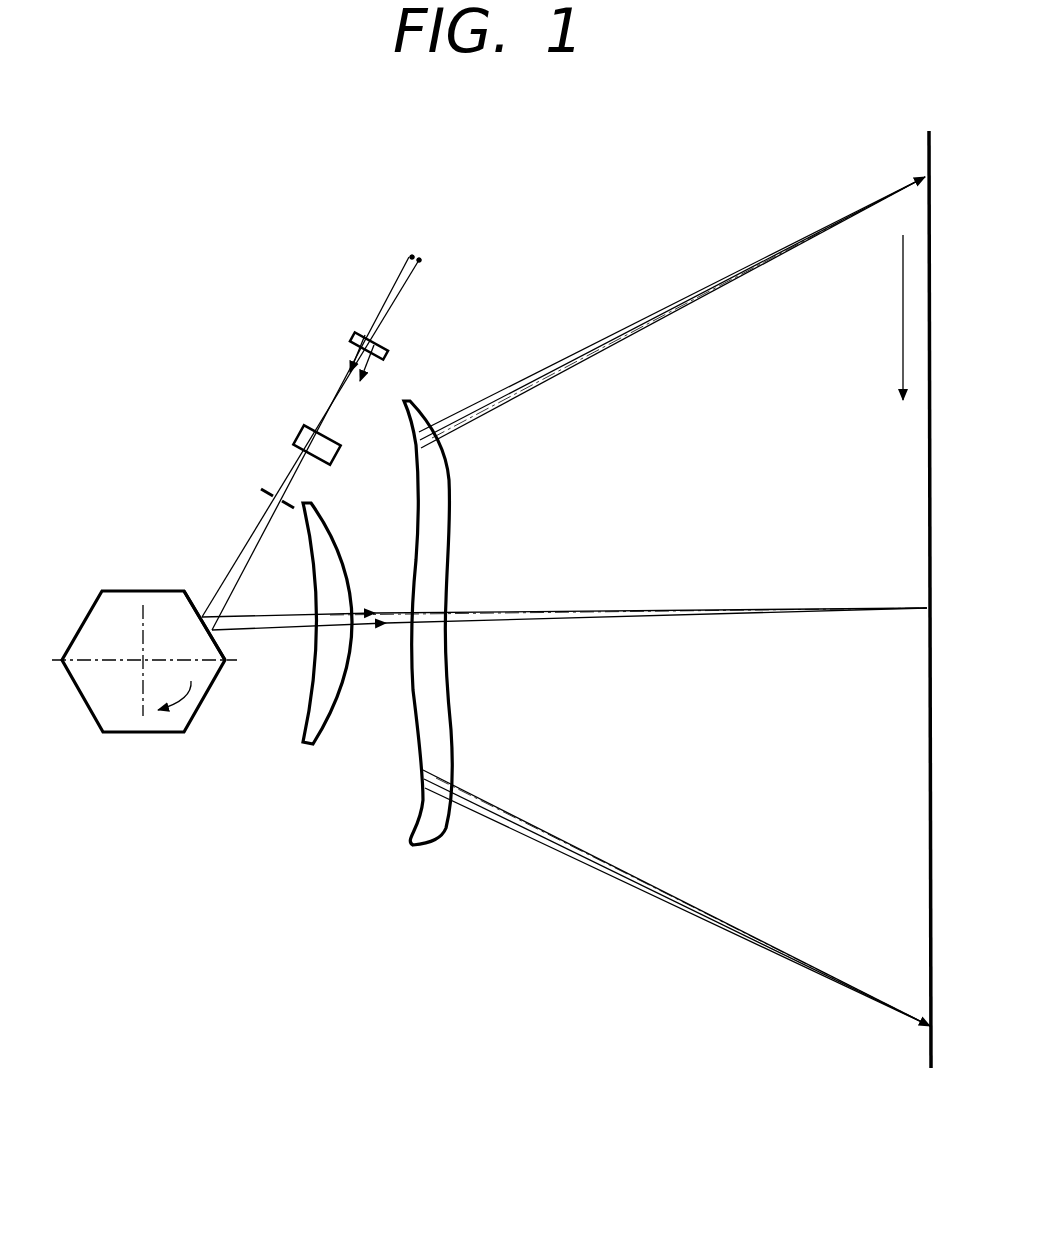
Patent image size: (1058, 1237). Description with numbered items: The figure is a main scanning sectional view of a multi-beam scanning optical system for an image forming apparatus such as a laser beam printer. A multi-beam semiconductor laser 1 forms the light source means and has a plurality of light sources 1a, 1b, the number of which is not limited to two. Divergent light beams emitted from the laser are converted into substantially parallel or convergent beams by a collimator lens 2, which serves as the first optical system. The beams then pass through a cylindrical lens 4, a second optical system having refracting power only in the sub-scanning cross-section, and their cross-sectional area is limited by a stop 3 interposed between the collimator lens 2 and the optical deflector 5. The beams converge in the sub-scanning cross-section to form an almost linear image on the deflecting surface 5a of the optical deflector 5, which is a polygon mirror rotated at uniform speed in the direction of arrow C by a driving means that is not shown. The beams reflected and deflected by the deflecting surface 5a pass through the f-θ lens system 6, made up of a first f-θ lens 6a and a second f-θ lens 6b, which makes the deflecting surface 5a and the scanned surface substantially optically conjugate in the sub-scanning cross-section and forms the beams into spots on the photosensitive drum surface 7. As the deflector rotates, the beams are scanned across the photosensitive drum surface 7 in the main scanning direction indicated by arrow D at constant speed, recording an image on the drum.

The multi-beam semiconductor laser 1 is at (462, 236).
The light source 1a is at (412, 256).
The light source 1b is at (420, 259).
The collimator lens 2 is at (357, 340).
The stop 3 is at (268, 487).
The cylindrical lens 4 is at (302, 433).
The optical deflector 5 is at (124, 600).
The deflecting surface 5a is at (202, 601).
The f-θ lens system 6 is at (360, 640).
The first f-θ lens 6a is at (307, 748).
The second f-θ lens 6b is at (404, 631).
The photosensitive drum surface 7 is at (926, 143).
The rotation direction arrow C is at (182, 686).
The main scanning direction arrow D is at (902, 335).